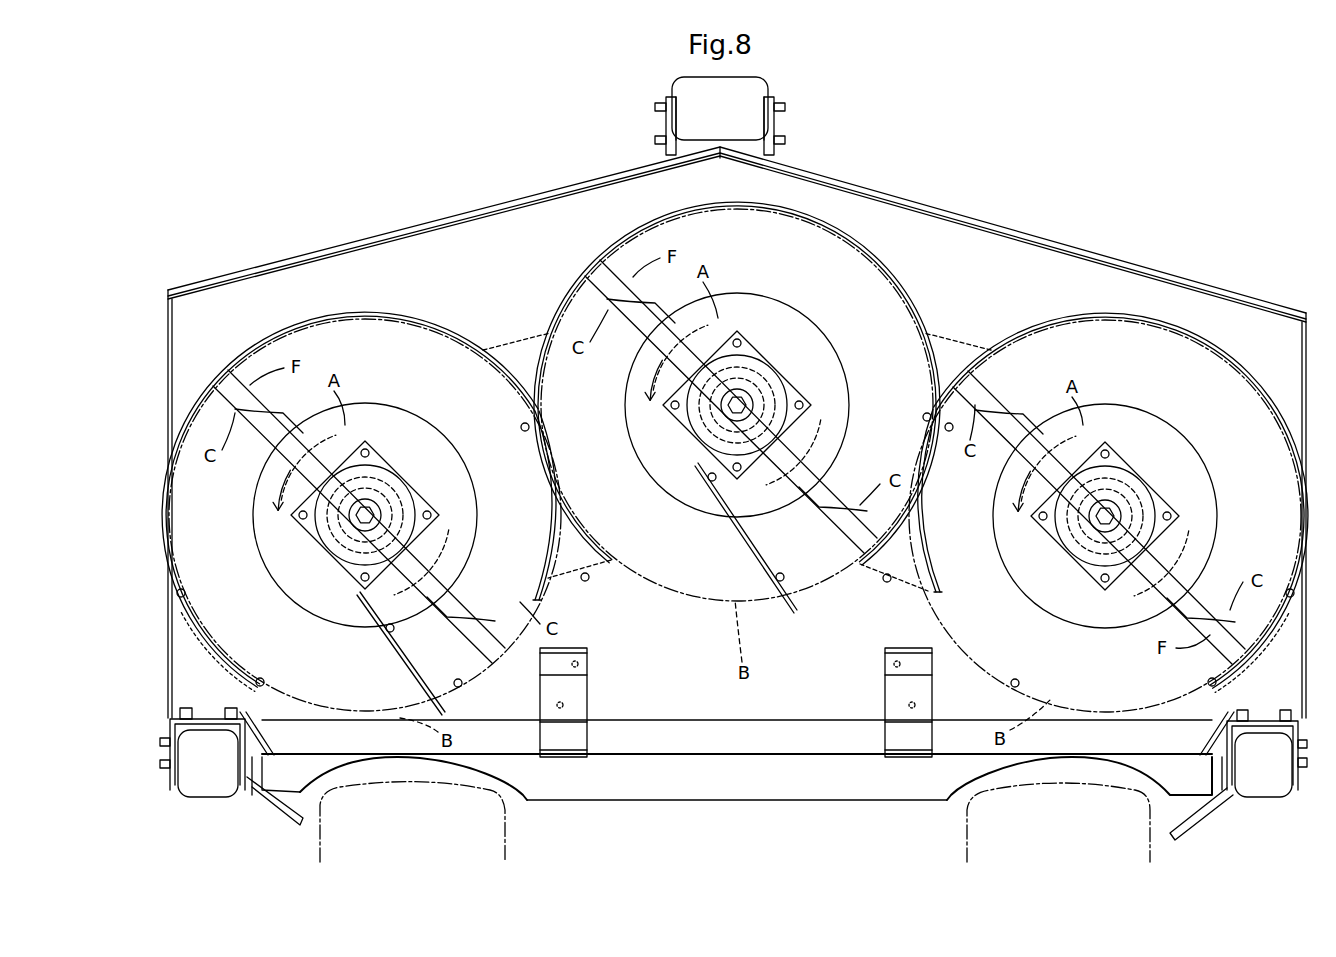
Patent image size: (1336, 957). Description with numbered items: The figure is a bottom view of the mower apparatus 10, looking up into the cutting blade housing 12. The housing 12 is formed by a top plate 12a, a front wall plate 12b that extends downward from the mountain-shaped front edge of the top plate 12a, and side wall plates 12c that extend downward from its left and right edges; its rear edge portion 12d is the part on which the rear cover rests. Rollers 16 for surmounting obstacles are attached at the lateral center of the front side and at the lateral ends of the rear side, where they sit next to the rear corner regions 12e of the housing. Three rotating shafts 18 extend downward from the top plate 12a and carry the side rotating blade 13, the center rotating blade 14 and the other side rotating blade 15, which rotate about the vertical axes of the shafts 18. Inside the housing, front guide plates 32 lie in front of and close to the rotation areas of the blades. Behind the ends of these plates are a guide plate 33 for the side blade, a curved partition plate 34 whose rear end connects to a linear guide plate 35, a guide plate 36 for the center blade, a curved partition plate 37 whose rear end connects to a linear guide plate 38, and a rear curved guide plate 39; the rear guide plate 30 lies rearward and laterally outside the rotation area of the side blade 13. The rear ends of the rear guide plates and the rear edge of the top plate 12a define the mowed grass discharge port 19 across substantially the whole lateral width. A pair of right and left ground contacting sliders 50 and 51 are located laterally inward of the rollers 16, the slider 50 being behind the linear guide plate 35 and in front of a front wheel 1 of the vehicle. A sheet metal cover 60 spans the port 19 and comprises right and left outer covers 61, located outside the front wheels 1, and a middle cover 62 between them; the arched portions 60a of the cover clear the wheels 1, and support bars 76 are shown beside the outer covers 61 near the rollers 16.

The mower apparatus 10 is at (388, 172).
The cutting blade housing 12 is at (1031, 228).
The top plate 12a is at (558, 220).
The front wall plate 12b is at (485, 222).
The side wall plate 12c is at (172, 368).
The rear edge portion 12d is at (688, 742).
The rear corner wall portion 12e is at (268, 742).
The roller 16 is at (755, 88).
The front guide plate 32 is at (352, 315).
The guide plate for the center blade 36 is at (592, 525).
The curved partition plate 34 is at (850, 565).
The curved partition plate 37 is at (555, 553).
The guide plate for the side blade 33 is at (935, 521).
The rear curved guide plate 39 is at (215, 640).
The rear guide plate 30 is at (1240, 695).
The side rotating blade 13 is at (1170, 560).
The center rotating blade 14 is at (690, 432).
The side rotating blade 15 is at (330, 522).
The rotating shaft 18 is at (367, 510).
The linear guide plate 35 is at (745, 540).
The linear guide plate 38 is at (378, 630).
The ground contacting slider 51 is at (583, 690).
The ground contacting slider 50 is at (885, 690).
The sheet metal cover 60 is at (742, 809).
The wheel arch portion of rear cover 60a is at (381, 760).
The middle cover 62 is at (672, 801).
The outer cover 61 is at (263, 787).
The support bar 76 is at (283, 820).
The front wheel 1 is at (505, 840).
The mowed grass discharge port 19 is at (740, 760).